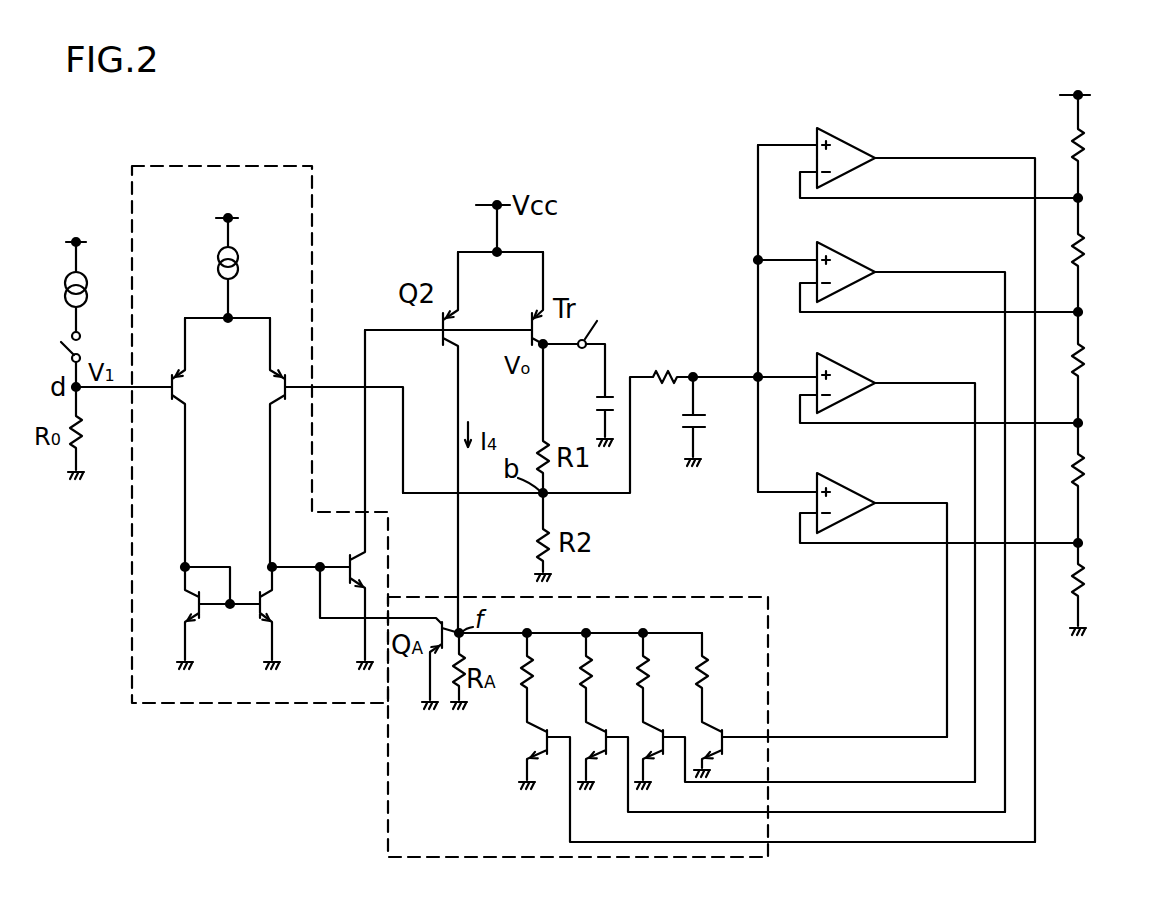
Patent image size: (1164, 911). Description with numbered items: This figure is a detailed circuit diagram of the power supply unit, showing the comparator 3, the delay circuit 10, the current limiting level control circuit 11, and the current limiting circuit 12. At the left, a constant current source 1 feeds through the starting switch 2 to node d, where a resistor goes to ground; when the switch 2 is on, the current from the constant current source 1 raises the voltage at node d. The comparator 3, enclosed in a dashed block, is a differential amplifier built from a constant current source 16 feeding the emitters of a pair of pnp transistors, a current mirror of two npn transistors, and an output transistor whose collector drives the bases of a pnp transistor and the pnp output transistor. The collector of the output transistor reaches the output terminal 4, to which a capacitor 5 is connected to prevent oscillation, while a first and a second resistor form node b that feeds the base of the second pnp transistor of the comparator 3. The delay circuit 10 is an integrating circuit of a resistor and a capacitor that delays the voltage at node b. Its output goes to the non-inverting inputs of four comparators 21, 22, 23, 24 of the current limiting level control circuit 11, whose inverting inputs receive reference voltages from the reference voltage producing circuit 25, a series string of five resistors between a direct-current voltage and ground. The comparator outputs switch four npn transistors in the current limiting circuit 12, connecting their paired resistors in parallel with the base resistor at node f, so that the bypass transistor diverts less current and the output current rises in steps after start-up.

The constant current source 1 is at (90, 286).
The starting switch 2 is at (64, 333).
The comparator 3 is at (270, 164).
The output terminal 4 is at (581, 349).
The capacitor 5 is at (590, 407).
The delay circuit 10 is at (706, 346).
The current limiting level control circuit 11 is at (936, 81).
The current limiting circuit 12 is at (388, 803).
The constant current source 16 is at (216, 263).
The comparator 21 is at (848, 517).
The comparator 22 is at (848, 397).
The comparator 23 is at (848, 286).
The comparator 24 is at (848, 172).
The reference voltage producing circuit 25 is at (1158, 336).